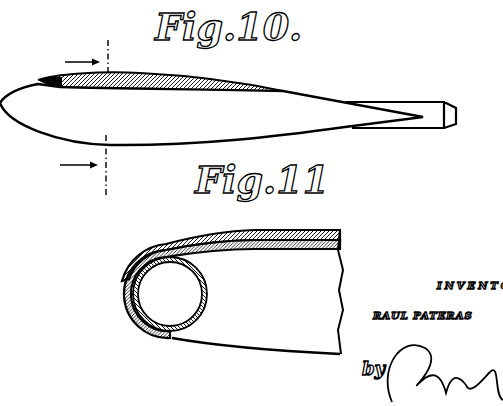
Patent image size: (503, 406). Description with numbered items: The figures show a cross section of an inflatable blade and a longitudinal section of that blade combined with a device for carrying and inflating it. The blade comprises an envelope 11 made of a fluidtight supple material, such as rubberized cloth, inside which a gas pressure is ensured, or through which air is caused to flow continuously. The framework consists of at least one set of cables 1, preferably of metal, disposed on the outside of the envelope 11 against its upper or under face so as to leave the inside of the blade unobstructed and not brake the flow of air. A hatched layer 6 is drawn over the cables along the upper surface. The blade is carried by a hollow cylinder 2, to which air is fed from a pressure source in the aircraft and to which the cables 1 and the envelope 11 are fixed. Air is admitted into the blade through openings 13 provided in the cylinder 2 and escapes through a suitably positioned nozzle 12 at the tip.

In FIG. 10, the cables 1 is at (143, 79).
In FIG. 11, the cables 1 is at (332, 238).
In FIG. 11, the hollow cylinder 2 is at (208, 297).
In FIG. 10, the resilient layer 6 is at (156, 79).
In FIG. 11, the resilient layer 6 is at (306, 230).
In FIG. 10, the envelope 11 is at (304, 77).
In FIG. 10, the nozzle 12 is at (427, 105).
In FIG. 11, the openings 13 is at (196, 276).